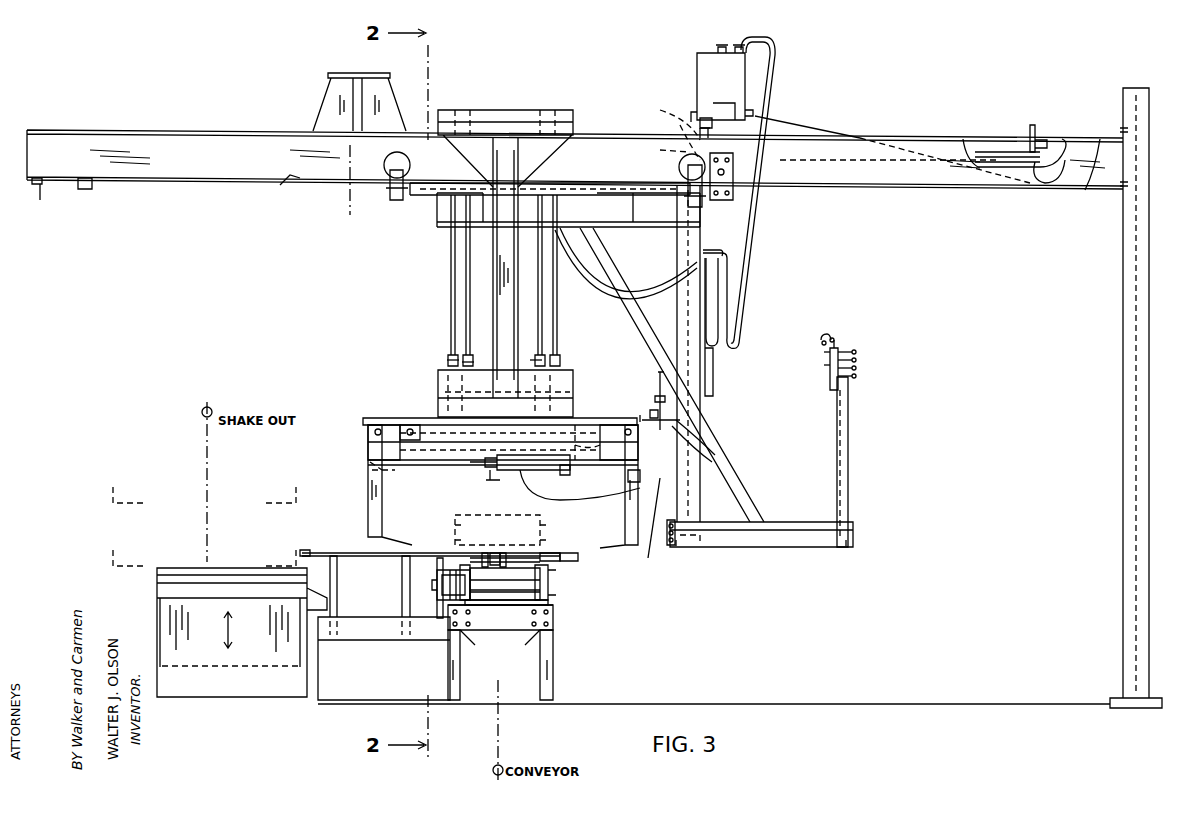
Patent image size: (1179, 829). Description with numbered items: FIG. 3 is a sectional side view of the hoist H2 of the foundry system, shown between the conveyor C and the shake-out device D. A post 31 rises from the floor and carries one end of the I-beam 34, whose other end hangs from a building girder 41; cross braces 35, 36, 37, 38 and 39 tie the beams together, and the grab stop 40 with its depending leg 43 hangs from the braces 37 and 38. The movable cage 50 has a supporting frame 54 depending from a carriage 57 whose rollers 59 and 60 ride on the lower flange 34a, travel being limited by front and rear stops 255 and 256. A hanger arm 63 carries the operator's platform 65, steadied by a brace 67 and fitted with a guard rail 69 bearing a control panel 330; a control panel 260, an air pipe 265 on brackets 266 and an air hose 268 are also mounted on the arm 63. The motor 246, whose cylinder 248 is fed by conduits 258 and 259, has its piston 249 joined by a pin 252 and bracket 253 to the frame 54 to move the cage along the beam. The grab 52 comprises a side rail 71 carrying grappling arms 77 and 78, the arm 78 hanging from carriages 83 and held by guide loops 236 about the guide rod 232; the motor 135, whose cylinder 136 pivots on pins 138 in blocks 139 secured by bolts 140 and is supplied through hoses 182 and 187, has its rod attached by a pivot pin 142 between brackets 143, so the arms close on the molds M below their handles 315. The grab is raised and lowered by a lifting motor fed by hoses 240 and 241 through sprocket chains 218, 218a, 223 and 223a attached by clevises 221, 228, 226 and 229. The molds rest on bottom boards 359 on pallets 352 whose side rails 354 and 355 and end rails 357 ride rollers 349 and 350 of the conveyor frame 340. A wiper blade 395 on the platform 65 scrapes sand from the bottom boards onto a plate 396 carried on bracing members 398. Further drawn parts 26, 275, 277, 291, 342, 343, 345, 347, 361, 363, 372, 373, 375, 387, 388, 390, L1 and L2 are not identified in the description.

The base frame 26 is at (320, 680).
The post 31 is at (1124, 385).
The I-beam 34 is at (248, 178).
The lower flange 34a is at (296, 178).
The cross brace 35 is at (48, 190).
The cross brace 36 is at (1036, 134).
The cross brace 37 is at (695, 110).
The cross brace 38 is at (540, 120).
The cross brace 39 is at (462, 120).
The grab stop 40 is at (494, 258).
The girder 41 is at (343, 73).
The arm 43 is at (500, 320).
The cage 50 is at (856, 444).
The grab 52 is at (375, 410).
The supporting frame 54 is at (628, 233).
The carriage 57 is at (620, 195).
The rollers 59 is at (385, 178).
The rollers 60 is at (680, 168).
The hanger arm 63 is at (700, 504).
The platform 65 is at (800, 535).
The brace 67 is at (740, 478).
The guard rail 69 is at (848, 468).
The side rail 71 is at (440, 430).
The grappling arm 77 is at (360, 495).
The grappling arm 78 is at (618, 512).
The carriages 83 is at (604, 494).
The motor 135 is at (508, 483).
The cylinder 136 is at (520, 456).
The pins 138 is at (566, 475).
The blocks 139 is at (604, 428).
The bolts 140 is at (608, 470).
The pivot pin 142 is at (370, 468).
The brackets 143 is at (368, 453).
The hose 182 is at (644, 529).
The hose 187 is at (548, 500).
The sprocket chain 218 is at (560, 338).
The sprocket chain 218a is at (466, 298).
The clevis 221 is at (574, 370).
The sprocket chain 223 is at (538, 310).
The sprocket chain 223a is at (450, 270).
The clevis 226 is at (535, 358).
The clevis 228 is at (448, 364).
The clevis 229 is at (447, 358).
The guide rod 232 is at (655, 398).
The guide loops 236 is at (652, 412).
The hose 240 is at (610, 300).
The hose 241 is at (590, 275).
The motor 246 is at (988, 144).
The cylinder 248 is at (1003, 150).
The piston 249 is at (670, 116).
The pin 252 is at (680, 132).
The bracket 253 is at (665, 155).
The stop 255 is at (92, 189).
The stop 256 is at (730, 200).
The conduit 258 is at (790, 112).
The conduit 259 is at (835, 132).
The control panel 260 is at (720, 382).
The pipe 265 is at (712, 440).
The brackets 266 is at (714, 452).
The air hose 268 is at (660, 378).
The tank 275 is at (712, 60).
The tube 277 is at (771, 80).
The tube 291 is at (778, 60).
The handles 315 is at (455, 528).
The control panel 330 is at (843, 342).
The frame 340 is at (556, 628).
The bracket 342 is at (445, 602).
The bearing 343 is at (548, 575).
The leg 345 is at (554, 655).
The shaft 347 is at (500, 590).
The rollers 349 is at (485, 605).
The rollers 350 is at (548, 598).
The pallet 352 is at (500, 560).
The side rail 354 is at (495, 552).
The side rail 355 is at (565, 553).
The end rails 357 is at (562, 557).
The bottom boards 359 is at (545, 552).
The motor 361 is at (440, 582).
The coupling 363 is at (450, 592).
The wire 372 is at (858, 352).
The wire 373 is at (858, 361).
The wire 375 is at (826, 355).
The wire 387 is at (858, 369).
The wire 388 is at (858, 378).
The wire 390 is at (826, 367).
The wiper blade 395 is at (676, 546).
The plate 396 is at (335, 552).
The bracing members 398 is at (383, 636).
The conveyor C is at (566, 618).
The shake-out device D is at (196, 562).
The hoist H2 is at (1075, 130).
The line L1 is at (822, 338).
The line L2 is at (834, 336).
The molds M is at (455, 515).